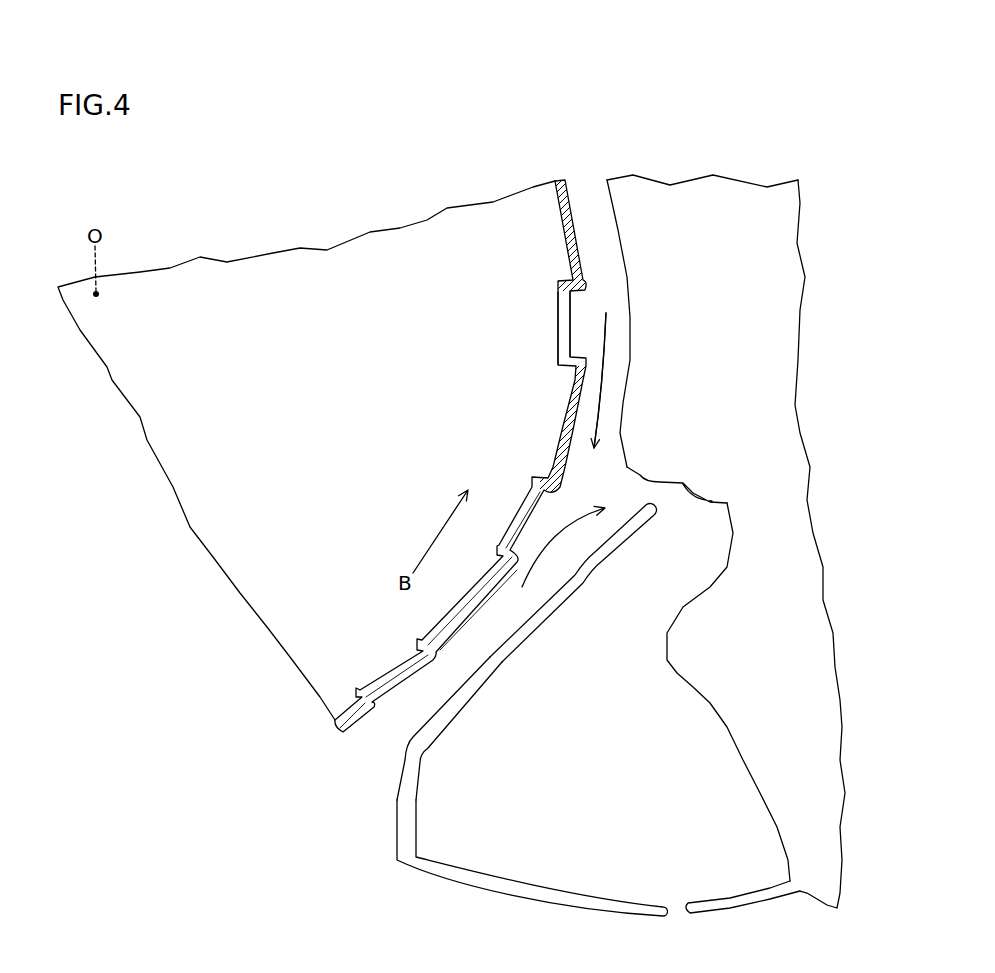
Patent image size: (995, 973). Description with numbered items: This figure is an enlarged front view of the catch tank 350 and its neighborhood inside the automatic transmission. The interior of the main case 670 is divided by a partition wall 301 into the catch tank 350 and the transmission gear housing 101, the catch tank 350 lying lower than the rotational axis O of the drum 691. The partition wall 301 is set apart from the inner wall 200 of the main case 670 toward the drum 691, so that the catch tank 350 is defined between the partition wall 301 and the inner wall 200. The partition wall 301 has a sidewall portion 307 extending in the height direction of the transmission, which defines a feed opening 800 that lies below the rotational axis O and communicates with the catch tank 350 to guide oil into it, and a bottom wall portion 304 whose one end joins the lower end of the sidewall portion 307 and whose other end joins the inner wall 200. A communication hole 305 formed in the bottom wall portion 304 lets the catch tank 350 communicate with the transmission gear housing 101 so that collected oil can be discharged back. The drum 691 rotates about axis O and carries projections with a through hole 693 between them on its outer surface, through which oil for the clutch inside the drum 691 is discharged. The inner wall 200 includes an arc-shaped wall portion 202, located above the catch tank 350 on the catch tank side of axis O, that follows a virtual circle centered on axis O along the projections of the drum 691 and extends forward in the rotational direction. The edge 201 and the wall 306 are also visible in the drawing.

The transmission gear housing 101 is at (390, 188).
The drum 691 is at (494, 210).
The through hole 693 is at (562, 322).
The feed opening 800 is at (609, 480).
The inner wall 200 is at (698, 515).
The arc-shaped wall portion 202 is at (618, 228).
The main case 670 is at (738, 195).
The edge portion 201 is at (727, 503).
The catch tank 350 is at (724, 761).
The lower wall 306 is at (735, 908).
The sidewall portion 307 is at (498, 658).
The partition wall 301 is at (428, 753).
The bottom wall portion 304 is at (566, 905).
The communication hole 305 is at (667, 912).